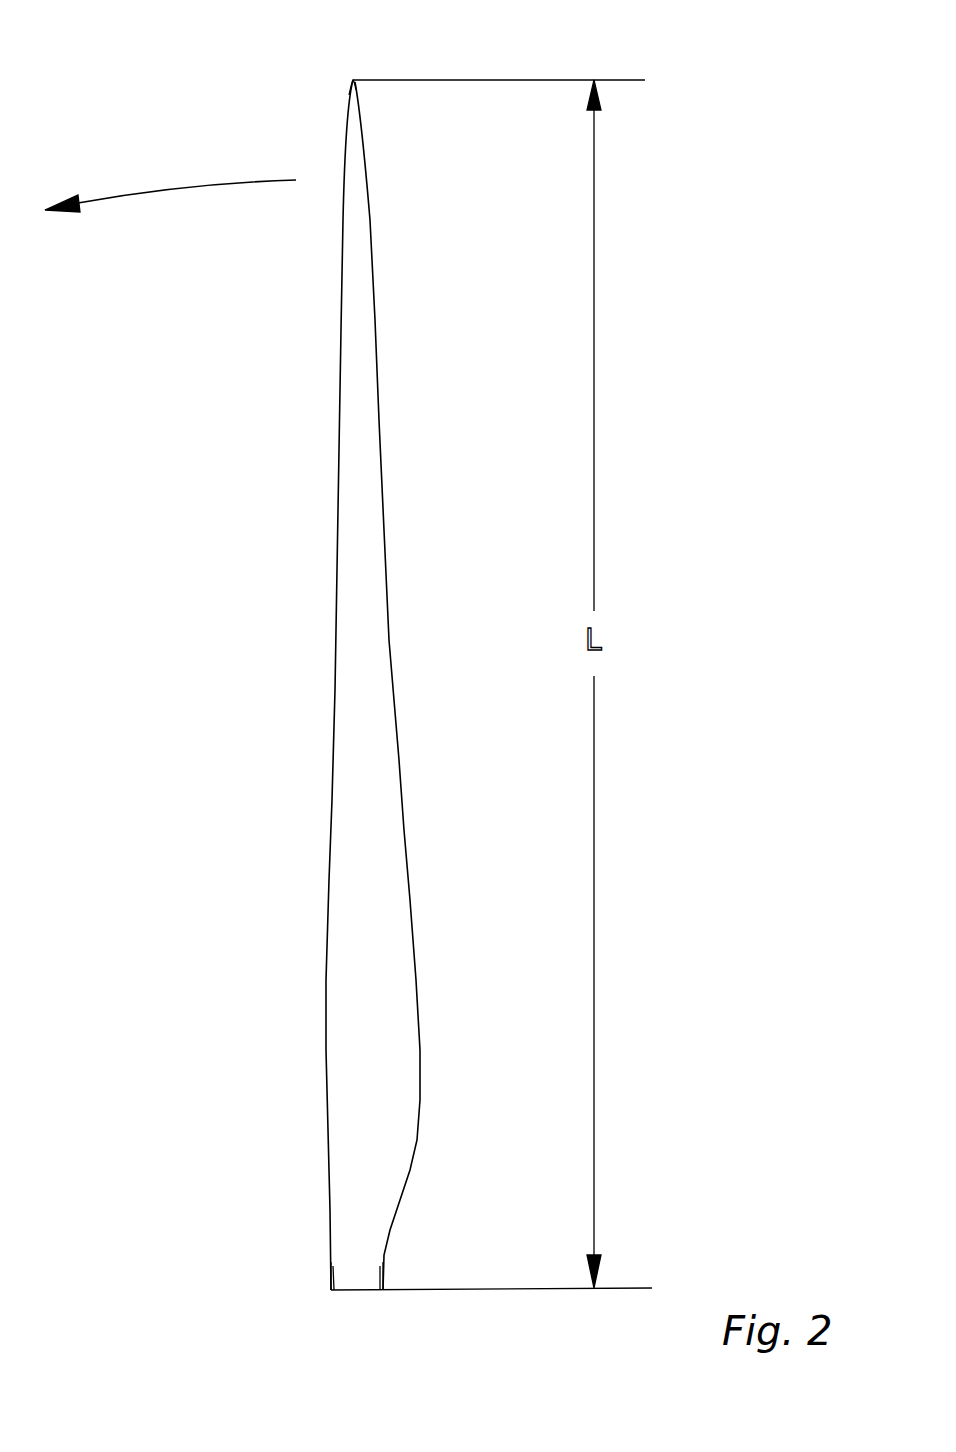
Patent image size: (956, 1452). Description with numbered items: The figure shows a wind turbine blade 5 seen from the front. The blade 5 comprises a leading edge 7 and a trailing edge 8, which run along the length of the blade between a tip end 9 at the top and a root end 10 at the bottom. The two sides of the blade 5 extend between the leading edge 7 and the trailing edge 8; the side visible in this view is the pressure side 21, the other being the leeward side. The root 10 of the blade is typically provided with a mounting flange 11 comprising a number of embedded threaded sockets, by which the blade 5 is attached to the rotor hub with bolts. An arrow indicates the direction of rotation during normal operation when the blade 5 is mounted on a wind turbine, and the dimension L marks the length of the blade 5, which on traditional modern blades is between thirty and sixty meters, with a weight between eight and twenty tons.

The wind turbine blade 5 is at (311, 675).
The leading edge 7 is at (296, 510).
The trailing edge 8 is at (395, 697).
The tip end 9 is at (354, 79).
The root end 10 is at (355, 1290).
The mounting flange 11 is at (380, 1290).
The pressure side 21 is at (377, 968).